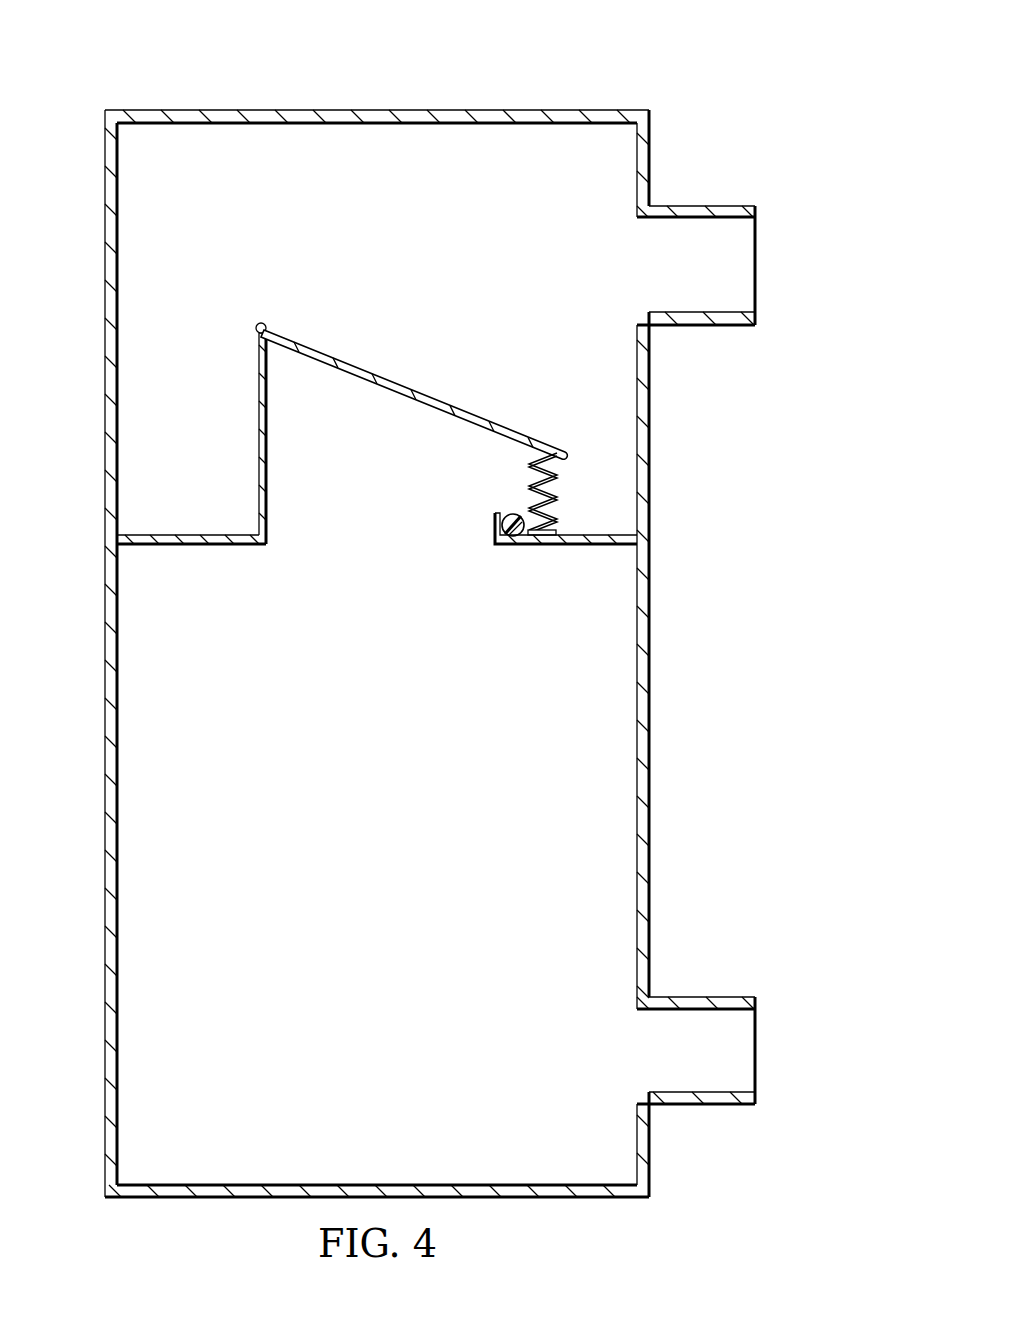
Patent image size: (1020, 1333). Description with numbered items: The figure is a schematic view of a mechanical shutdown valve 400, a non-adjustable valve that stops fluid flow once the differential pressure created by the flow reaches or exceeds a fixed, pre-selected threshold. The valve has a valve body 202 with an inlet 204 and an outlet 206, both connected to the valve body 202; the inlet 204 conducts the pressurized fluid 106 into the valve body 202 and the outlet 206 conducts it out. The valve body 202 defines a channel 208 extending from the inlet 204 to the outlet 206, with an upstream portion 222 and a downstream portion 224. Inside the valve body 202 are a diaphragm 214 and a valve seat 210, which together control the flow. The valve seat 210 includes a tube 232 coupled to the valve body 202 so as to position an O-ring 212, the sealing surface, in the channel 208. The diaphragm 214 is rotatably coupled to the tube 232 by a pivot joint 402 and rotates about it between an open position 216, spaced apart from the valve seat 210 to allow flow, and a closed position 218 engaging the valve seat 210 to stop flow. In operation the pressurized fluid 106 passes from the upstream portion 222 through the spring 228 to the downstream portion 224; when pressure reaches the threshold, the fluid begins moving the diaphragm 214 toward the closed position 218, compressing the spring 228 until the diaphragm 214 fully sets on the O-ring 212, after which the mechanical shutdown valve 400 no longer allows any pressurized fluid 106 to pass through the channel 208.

The mechanical shutdown valve 400 is at (169, 60).
The pressurized fluid 106 is at (768, 262).
The valve body 202 is at (106, 342).
The inlet 204 is at (690, 205).
The outlet 206 is at (722, 1105).
The channel 208 is at (303, 566).
The valve seat 210 is at (474, 547).
The O-ring 212 is at (512, 513).
The diaphragm 214 is at (398, 382).
The open position 216 is at (614, 432).
The closed position 218 is at (614, 500).
The upstream portion 222 is at (470, 234).
The downstream portion 224 is at (424, 930).
The spring 228 is at (558, 486).
The tube 232 is at (258, 428).
The pivot joint 402 is at (261, 322).